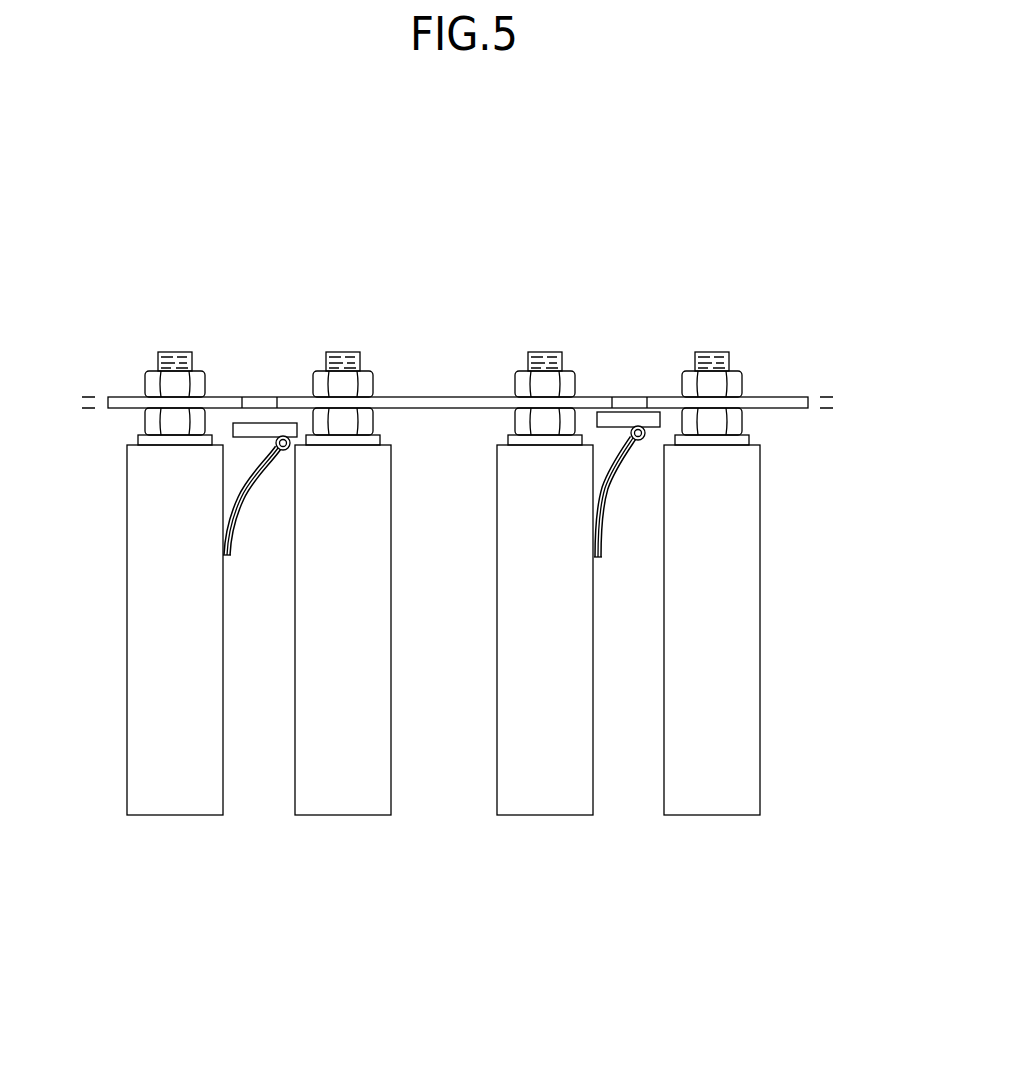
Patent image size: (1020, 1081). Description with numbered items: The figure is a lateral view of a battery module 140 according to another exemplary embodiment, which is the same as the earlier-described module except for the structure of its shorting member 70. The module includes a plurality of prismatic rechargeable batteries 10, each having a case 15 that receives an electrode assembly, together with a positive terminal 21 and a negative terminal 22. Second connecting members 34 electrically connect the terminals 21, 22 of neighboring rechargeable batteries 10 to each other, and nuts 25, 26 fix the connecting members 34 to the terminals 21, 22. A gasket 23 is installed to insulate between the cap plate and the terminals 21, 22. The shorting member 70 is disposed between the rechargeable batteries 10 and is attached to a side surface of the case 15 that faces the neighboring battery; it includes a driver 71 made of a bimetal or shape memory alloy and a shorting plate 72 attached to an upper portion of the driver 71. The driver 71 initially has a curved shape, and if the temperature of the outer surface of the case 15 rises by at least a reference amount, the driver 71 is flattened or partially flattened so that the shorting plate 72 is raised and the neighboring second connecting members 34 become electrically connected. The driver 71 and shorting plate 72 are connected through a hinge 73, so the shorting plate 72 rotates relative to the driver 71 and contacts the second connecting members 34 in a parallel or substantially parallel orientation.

The battery module 140 is at (649, 196).
The rechargeable battery 10 is at (155, 842).
The case 15 is at (536, 812).
The positive terminal 21 is at (346, 352).
The negative terminal 22 is at (545, 353).
The gasket 23 is at (138, 440).
The nut 25 is at (153, 425).
The nut 26 is at (316, 385).
The second connecting member 34 is at (438, 397).
The shorting member 70 is at (214, 498).
The driver 71 is at (222, 553).
The shorting plate 72 is at (235, 423).
The hinge 73 is at (279, 437).